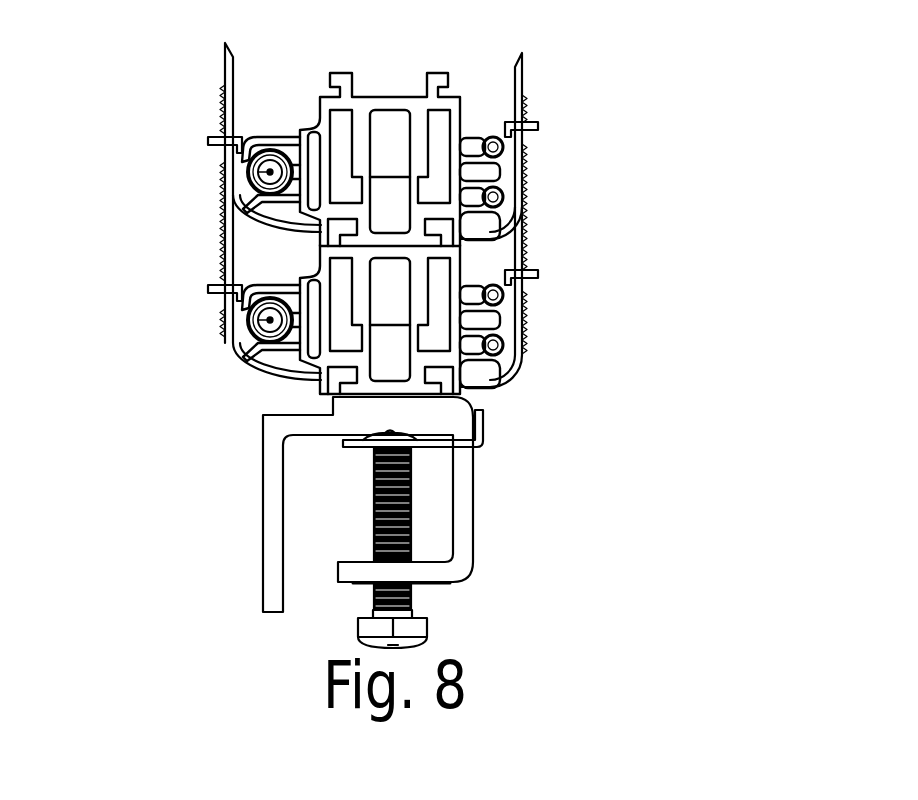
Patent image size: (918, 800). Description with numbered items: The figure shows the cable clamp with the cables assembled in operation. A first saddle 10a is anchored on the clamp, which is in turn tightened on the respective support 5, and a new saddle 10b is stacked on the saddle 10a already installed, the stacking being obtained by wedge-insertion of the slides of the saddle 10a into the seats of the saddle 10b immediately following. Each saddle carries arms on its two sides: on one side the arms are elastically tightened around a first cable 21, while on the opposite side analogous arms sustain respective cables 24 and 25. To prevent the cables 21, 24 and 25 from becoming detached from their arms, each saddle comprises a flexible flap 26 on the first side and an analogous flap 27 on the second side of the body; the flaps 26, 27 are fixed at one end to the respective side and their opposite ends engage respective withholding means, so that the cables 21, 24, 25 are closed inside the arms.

The support 5 is at (275, 572).
The first saddle 10a is at (418, 357).
The new saddle 10b is at (453, 105).
The first cable 21 is at (268, 173).
The cable 24 is at (505, 197).
The cable 25 is at (520, 128).
The flexible flap 26 is at (227, 100).
The flap 27 is at (520, 167).